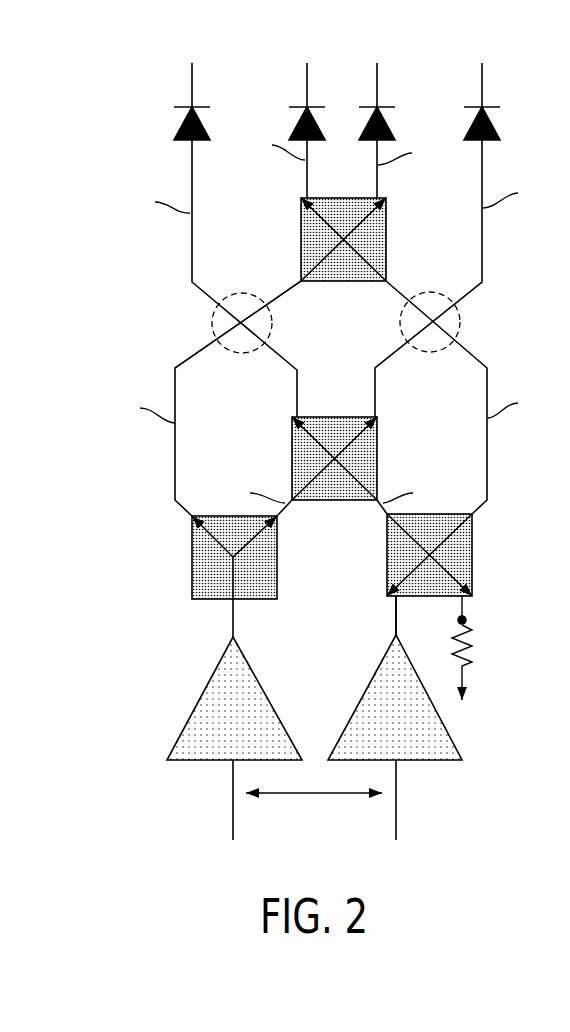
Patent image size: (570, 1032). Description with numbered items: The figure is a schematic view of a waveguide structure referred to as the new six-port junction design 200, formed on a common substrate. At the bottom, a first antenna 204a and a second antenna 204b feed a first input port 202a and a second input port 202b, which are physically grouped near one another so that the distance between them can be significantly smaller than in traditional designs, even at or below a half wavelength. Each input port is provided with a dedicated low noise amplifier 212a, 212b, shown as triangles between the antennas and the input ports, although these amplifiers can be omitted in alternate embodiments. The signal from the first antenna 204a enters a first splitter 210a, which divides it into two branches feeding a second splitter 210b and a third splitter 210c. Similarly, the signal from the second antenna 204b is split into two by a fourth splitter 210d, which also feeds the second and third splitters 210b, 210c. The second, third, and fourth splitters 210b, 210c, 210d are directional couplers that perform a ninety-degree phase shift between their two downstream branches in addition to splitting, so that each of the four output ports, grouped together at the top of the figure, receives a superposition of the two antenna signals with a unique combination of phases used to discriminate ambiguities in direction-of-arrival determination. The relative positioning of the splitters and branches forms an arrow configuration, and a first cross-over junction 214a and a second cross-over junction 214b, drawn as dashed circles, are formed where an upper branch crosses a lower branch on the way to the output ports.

The six-port junction design 200 is at (118, 97).
The first input port 202a is at (236, 617).
The second input port 202b is at (394, 607).
The first antenna 204a is at (236, 833).
The second antenna 204b is at (397, 820).
The first splitter 210a is at (192, 562).
The second splitter 210b is at (292, 443).
The third splitter 210c is at (300, 225).
The fourth splitter 210d is at (473, 548).
The low noise amplifier 212a is at (198, 698).
The low noise amplifier 212b is at (458, 740).
The first cross-over junction 214a is at (213, 323).
The second cross-over junction 214b is at (460, 322).